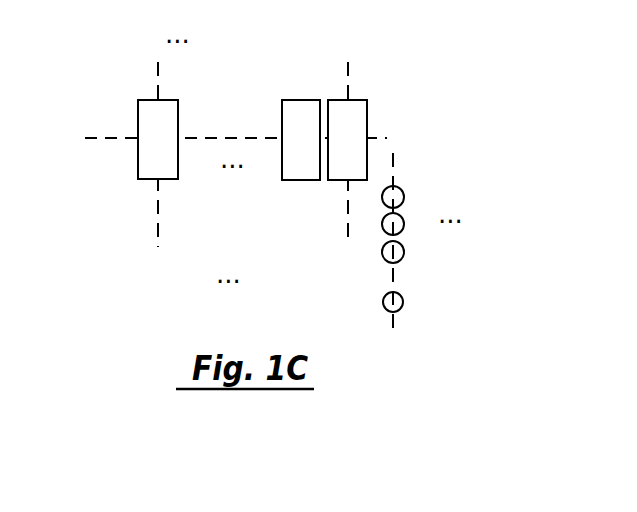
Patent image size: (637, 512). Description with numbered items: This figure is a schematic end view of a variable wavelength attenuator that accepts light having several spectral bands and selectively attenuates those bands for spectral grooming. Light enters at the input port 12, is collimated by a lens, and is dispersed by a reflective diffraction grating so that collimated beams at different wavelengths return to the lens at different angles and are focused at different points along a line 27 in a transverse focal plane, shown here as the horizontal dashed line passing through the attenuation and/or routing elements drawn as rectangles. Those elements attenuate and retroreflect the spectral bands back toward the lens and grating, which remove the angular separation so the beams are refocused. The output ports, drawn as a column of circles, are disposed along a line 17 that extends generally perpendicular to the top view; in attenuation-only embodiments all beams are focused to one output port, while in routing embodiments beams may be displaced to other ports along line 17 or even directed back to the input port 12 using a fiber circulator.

The input port 12 is at (403, 298).
The line 17 is at (395, 163).
The line 27 is at (93, 138).